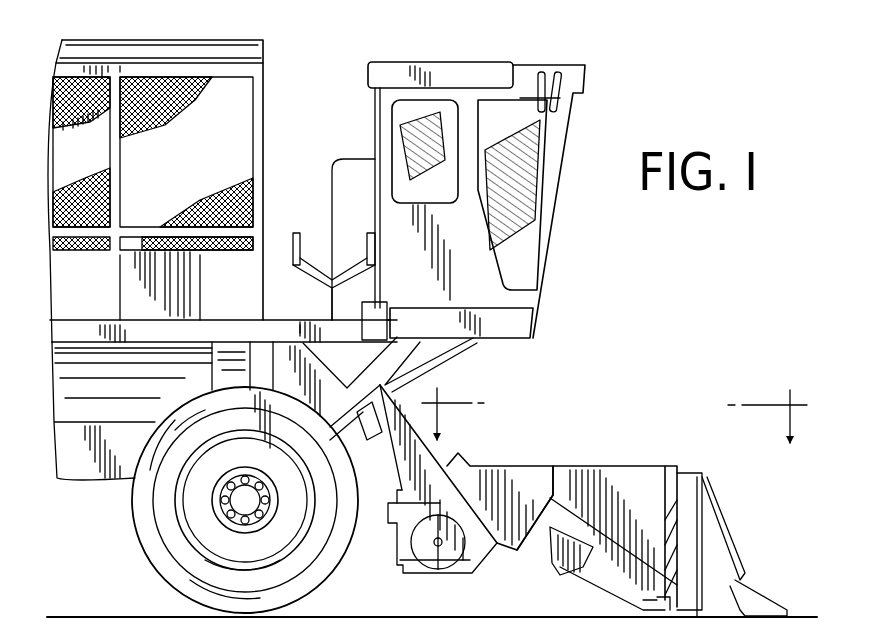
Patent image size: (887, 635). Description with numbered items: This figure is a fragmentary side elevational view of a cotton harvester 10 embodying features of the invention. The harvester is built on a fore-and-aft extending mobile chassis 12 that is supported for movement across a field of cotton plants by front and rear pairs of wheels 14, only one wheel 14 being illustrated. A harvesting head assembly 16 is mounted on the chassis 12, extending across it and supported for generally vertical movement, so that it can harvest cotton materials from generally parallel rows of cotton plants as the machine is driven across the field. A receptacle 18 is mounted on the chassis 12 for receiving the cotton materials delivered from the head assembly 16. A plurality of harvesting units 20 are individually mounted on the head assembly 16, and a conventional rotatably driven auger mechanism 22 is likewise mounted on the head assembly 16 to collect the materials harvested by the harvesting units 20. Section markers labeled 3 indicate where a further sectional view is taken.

The cotton harvester 10 is at (614, 117).
The chassis 12 is at (76, 458).
The wheels 14 is at (165, 544).
The harvesting head assembly 16 is at (557, 440).
The receptacle 18 is at (237, 125).
The harvesting units 20 is at (602, 459).
The auger mechanism 22 is at (408, 549).
The section line 3- 3 is at (613, 411).